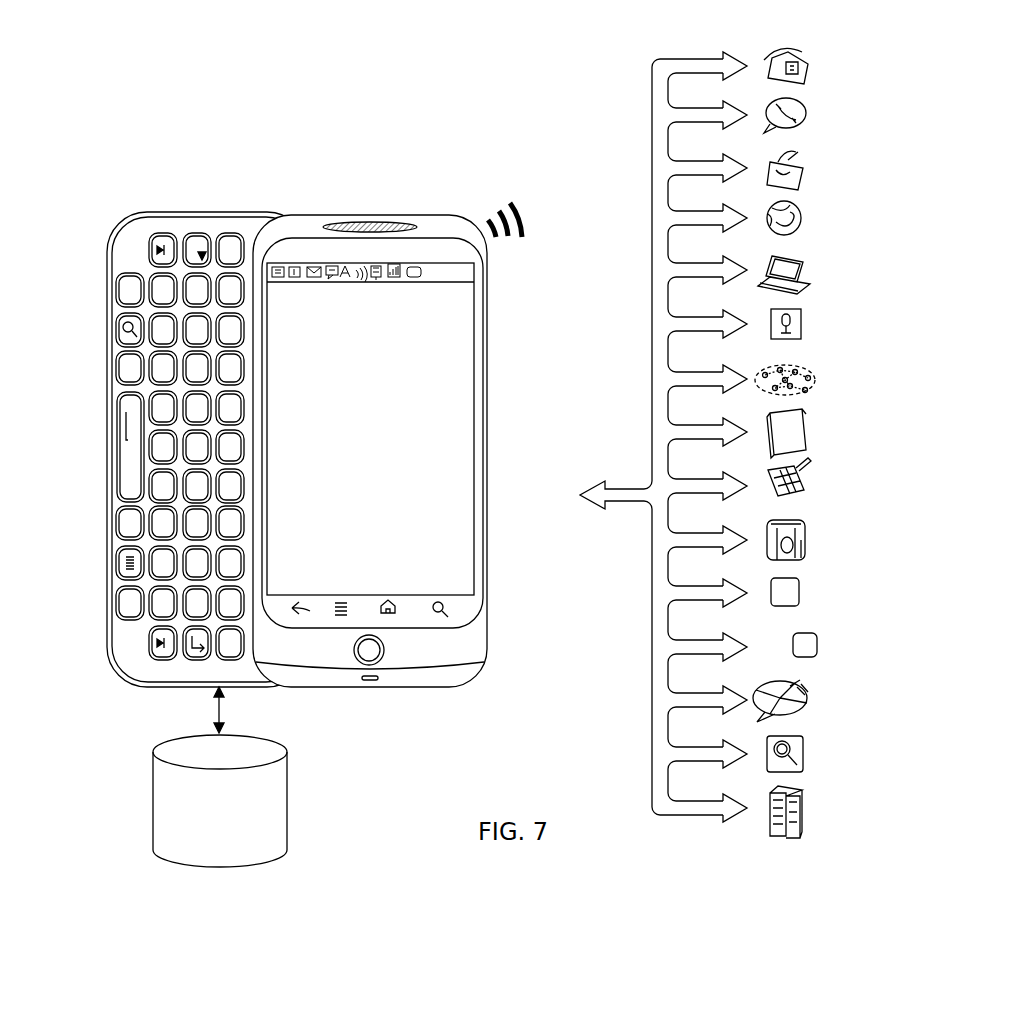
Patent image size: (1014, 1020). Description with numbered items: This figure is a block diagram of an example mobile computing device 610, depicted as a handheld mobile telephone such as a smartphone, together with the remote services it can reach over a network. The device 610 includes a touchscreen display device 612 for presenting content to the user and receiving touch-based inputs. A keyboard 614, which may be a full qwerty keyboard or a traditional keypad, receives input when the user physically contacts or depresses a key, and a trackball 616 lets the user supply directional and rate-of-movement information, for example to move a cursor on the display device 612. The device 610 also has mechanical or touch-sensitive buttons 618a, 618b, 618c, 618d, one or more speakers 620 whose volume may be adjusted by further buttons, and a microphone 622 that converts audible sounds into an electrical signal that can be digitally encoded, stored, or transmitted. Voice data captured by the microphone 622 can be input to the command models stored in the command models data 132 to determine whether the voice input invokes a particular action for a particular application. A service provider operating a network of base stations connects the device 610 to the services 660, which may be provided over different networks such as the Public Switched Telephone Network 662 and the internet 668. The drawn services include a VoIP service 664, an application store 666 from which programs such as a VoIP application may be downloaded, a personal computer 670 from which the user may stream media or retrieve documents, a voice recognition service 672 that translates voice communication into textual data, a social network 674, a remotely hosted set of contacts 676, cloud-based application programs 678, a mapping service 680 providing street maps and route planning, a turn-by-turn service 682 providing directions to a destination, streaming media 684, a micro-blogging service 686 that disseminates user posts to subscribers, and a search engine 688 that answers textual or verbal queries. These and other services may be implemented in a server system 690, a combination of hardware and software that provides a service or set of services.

The mobile computing device 610 is at (423, 154).
The touchscreen display device 612 is at (486, 437).
The keyboard 614 is at (222, 210).
The trackball 616 is at (388, 654).
The button 618a is at (297, 603).
The button 618b is at (340, 602).
The button 618c is at (390, 600).
The button 618d is at (439, 600).
The speaker 620 is at (379, 222).
The microphone 622 is at (368, 682).
The command models data 132 is at (205, 837).
The services 660 is at (745, 46).
The PSTN 662 is at (806, 64).
The VoIP service 664 is at (806, 110).
The application store 666 is at (805, 164).
The internet 668 is at (801, 210).
The personal computer 670 is at (806, 262).
The voice recognition service 672 is at (802, 316).
The social network 674 is at (812, 368).
The contacts 676 is at (806, 420).
The cloud-based application programs 678 is at (806, 474).
The mapping service 680 is at (806, 528).
The turn-by-turn service 682 is at (801, 584).
The streaming media 684 is at (817, 640).
The micro-blogging service 686 is at (806, 694).
The search engine 688 is at (803, 745).
The server system 690 is at (803, 800).